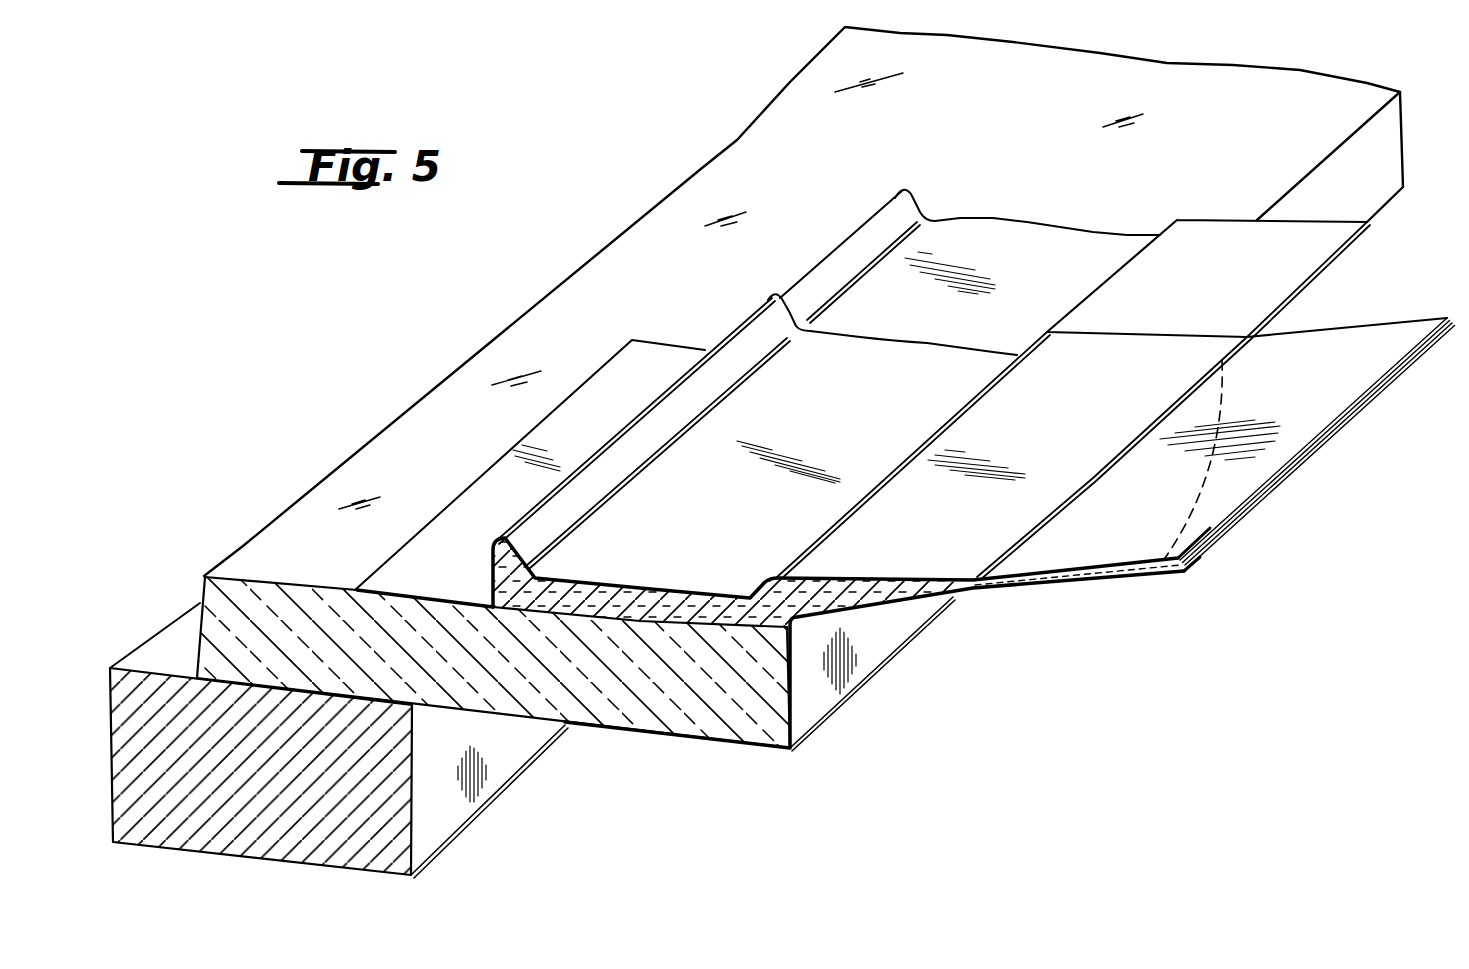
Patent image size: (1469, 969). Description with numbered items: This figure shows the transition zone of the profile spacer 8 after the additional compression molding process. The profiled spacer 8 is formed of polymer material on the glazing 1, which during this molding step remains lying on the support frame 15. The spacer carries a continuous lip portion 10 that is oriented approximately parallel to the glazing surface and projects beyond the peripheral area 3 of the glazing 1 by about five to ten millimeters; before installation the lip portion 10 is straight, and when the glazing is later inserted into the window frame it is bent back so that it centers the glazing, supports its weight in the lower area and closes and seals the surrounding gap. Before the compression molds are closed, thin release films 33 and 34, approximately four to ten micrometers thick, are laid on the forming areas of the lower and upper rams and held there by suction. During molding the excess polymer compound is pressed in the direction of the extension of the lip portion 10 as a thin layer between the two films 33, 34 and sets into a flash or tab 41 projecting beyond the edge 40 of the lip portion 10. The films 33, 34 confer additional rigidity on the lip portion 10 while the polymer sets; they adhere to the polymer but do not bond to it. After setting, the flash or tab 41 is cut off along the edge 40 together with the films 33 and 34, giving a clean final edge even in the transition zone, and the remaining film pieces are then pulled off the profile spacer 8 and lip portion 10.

The glazing 1 is at (1232, 88).
The peripheral area 3 is at (1387, 164).
The profiled spacer 8 is at (648, 598).
The lip portion 10 is at (1327, 243).
The support frame 15 is at (470, 812).
The release film 33 is at (686, 740).
The release film 34 is at (716, 598).
The edge of lip portion 40 is at (1330, 282).
The flash or tab 41 is at (1173, 520).